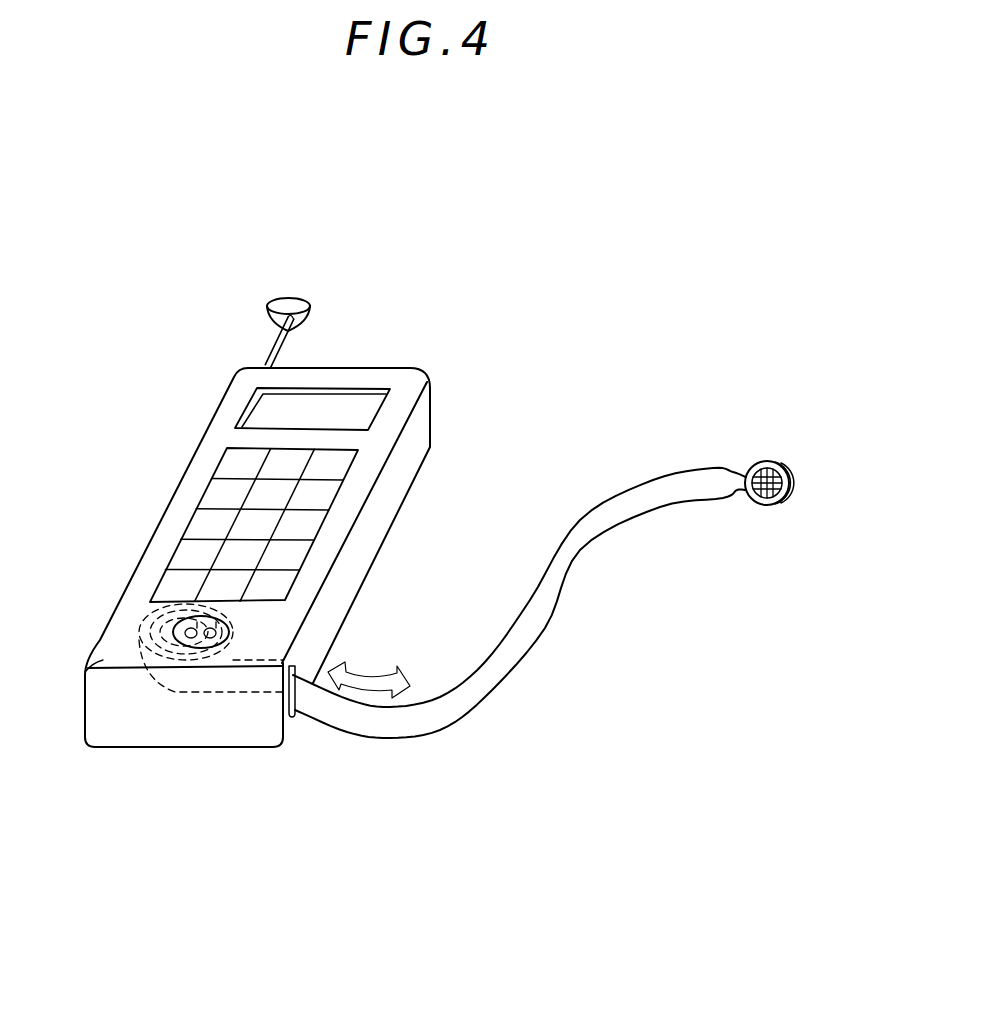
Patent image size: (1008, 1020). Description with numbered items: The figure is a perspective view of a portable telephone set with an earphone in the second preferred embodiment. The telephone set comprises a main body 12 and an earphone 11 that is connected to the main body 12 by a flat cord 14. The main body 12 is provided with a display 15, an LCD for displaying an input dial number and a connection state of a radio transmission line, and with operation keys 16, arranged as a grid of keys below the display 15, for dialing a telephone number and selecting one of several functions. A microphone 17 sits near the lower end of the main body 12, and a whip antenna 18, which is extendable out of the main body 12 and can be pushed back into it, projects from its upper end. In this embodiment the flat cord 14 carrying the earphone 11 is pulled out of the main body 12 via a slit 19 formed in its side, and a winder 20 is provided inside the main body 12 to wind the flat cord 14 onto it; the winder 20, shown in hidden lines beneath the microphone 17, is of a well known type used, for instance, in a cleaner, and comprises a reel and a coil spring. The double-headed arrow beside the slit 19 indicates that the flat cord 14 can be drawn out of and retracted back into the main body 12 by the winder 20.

The earphone 11 is at (768, 460).
The main body 12 is at (380, 362).
The flat cord 14 is at (607, 527).
The display 15 is at (360, 413).
The operation keys 16 is at (323, 492).
The microphone 17 is at (213, 653).
The whip antenna 18 is at (290, 297).
The slit 19 is at (293, 715).
The winder 20 is at (121, 678).